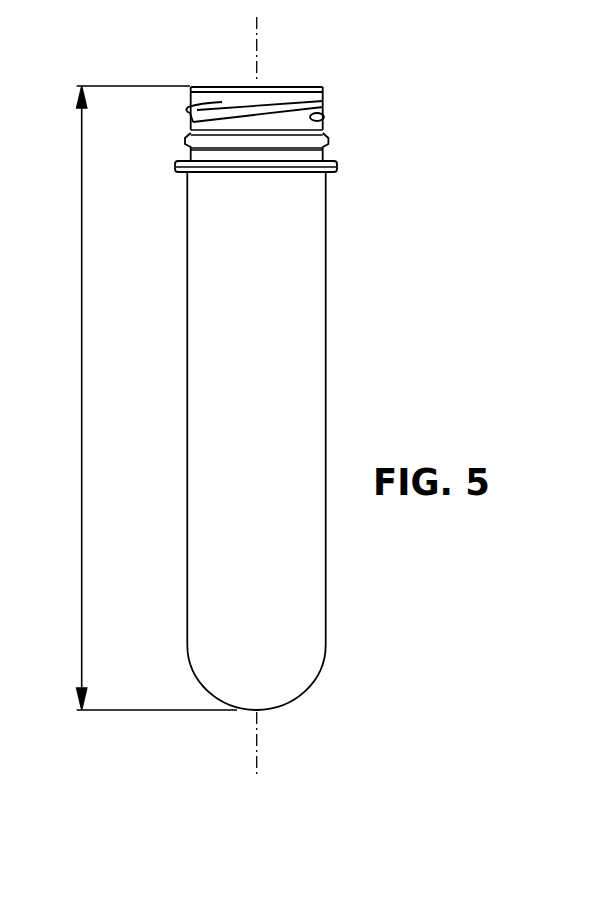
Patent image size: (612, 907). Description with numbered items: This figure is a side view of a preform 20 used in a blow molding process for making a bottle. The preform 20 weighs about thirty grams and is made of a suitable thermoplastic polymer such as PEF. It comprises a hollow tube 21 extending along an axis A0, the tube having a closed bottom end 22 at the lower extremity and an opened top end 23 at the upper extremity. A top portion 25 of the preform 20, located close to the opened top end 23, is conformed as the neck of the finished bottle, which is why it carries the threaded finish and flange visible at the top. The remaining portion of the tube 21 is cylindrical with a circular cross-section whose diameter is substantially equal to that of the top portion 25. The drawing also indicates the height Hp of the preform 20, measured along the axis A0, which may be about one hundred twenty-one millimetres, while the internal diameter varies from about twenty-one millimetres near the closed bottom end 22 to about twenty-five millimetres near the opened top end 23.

The preform 20 is at (329, 398).
The hollow tube 21 is at (327, 583).
The closed bottom end 22 is at (288, 702).
The opened top end 23 is at (212, 87).
The top portion 25 is at (333, 130).
The axis A0 is at (263, 30).
The height Hp is at (140, 398).